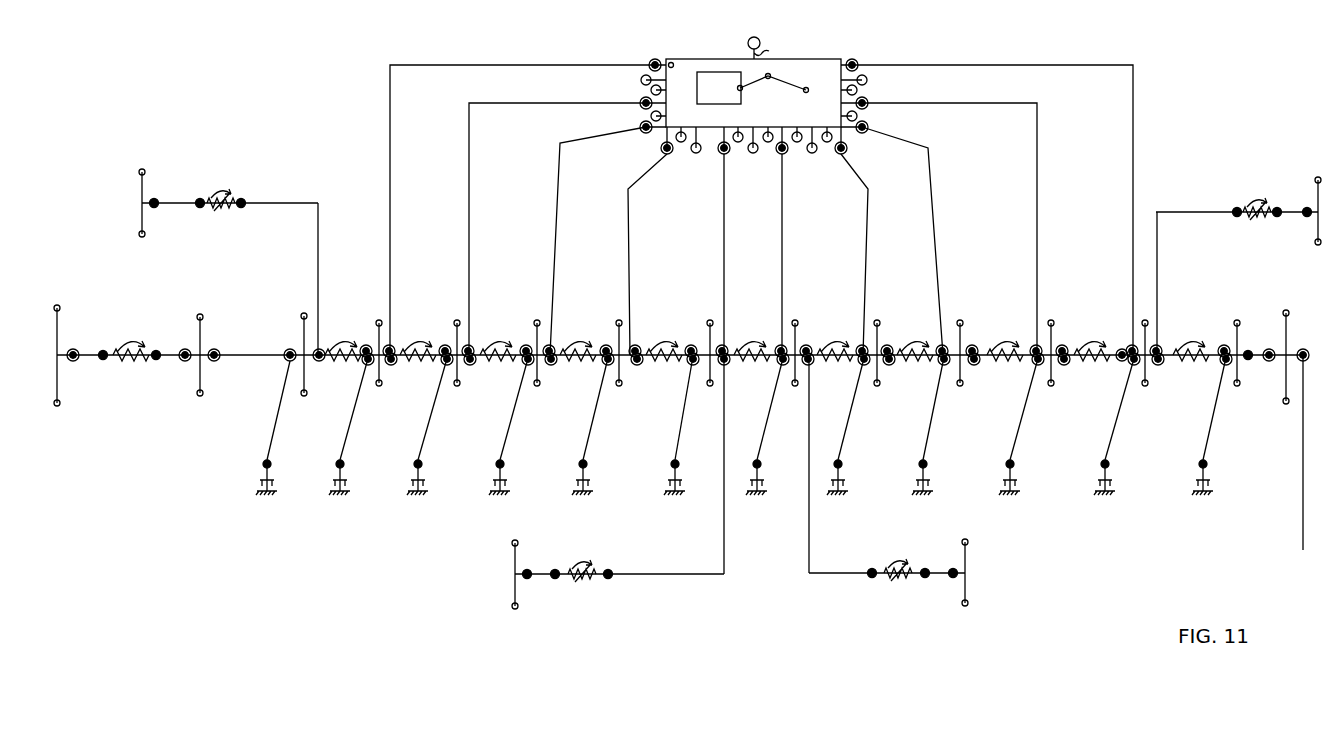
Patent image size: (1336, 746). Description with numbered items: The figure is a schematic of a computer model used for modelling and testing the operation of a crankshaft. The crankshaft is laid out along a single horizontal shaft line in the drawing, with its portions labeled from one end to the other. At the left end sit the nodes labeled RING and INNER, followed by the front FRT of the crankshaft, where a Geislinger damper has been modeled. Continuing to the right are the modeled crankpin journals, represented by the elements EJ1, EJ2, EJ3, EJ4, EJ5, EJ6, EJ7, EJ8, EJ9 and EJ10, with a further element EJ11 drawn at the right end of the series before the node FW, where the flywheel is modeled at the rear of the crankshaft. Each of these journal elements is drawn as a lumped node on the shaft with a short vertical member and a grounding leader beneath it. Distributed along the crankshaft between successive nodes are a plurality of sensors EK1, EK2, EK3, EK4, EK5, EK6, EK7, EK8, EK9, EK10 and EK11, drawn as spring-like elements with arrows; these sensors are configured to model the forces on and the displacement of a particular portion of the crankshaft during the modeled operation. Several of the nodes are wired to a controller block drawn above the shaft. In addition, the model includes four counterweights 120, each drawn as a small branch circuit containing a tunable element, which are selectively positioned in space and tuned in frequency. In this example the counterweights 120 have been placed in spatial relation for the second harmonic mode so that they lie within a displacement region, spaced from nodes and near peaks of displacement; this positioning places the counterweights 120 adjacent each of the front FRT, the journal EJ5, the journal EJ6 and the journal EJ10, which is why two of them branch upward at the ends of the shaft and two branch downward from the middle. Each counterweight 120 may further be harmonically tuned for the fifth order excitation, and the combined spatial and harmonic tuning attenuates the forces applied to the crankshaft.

The counterweight 120 is at (142, 212).
The sensor EK1 is at (343, 342).
The sensor EK2 is at (418, 342).
The sensor EK3 is at (498, 342).
The sensor EK4 is at (578, 342).
The sensor EK5 is at (664, 342).
The sensor EK6 is at (752, 342).
The sensor EK7 is at (835, 342).
The sensor EK8 is at (915, 342).
The sensor EK9 is at (1005, 342).
The sensor EK10 is at (1091, 342).
The sensor EK11 is at (1190, 342).
The crankpin journal model element EJ1 is at (363, 407).
The crankpin journal model element EJ2 is at (441, 407).
The crankpin journal model element EJ3 is at (523, 407).
The crankpin journal model element EJ4 is at (607, 407).
The crankpin journal model element EJ5 is at (697, 407).
The crankpin journal model element EJ6 is at (780, 407).
The crankpin journal model element EJ7 is at (861, 407).
The crankpin journal model element EJ8 is at (946, 407).
The crankpin journal model element EJ9 is at (1034, 407).
The crankpin journal model element EJ10 is at (1133, 407).
The inertia element EJ11 is at (1228, 407).
The ring gear node RING is at (110, 368).
The inner node INNER is at (194, 368).
The front FRT is at (291, 404).
The flywheel node FW is at (1286, 369).